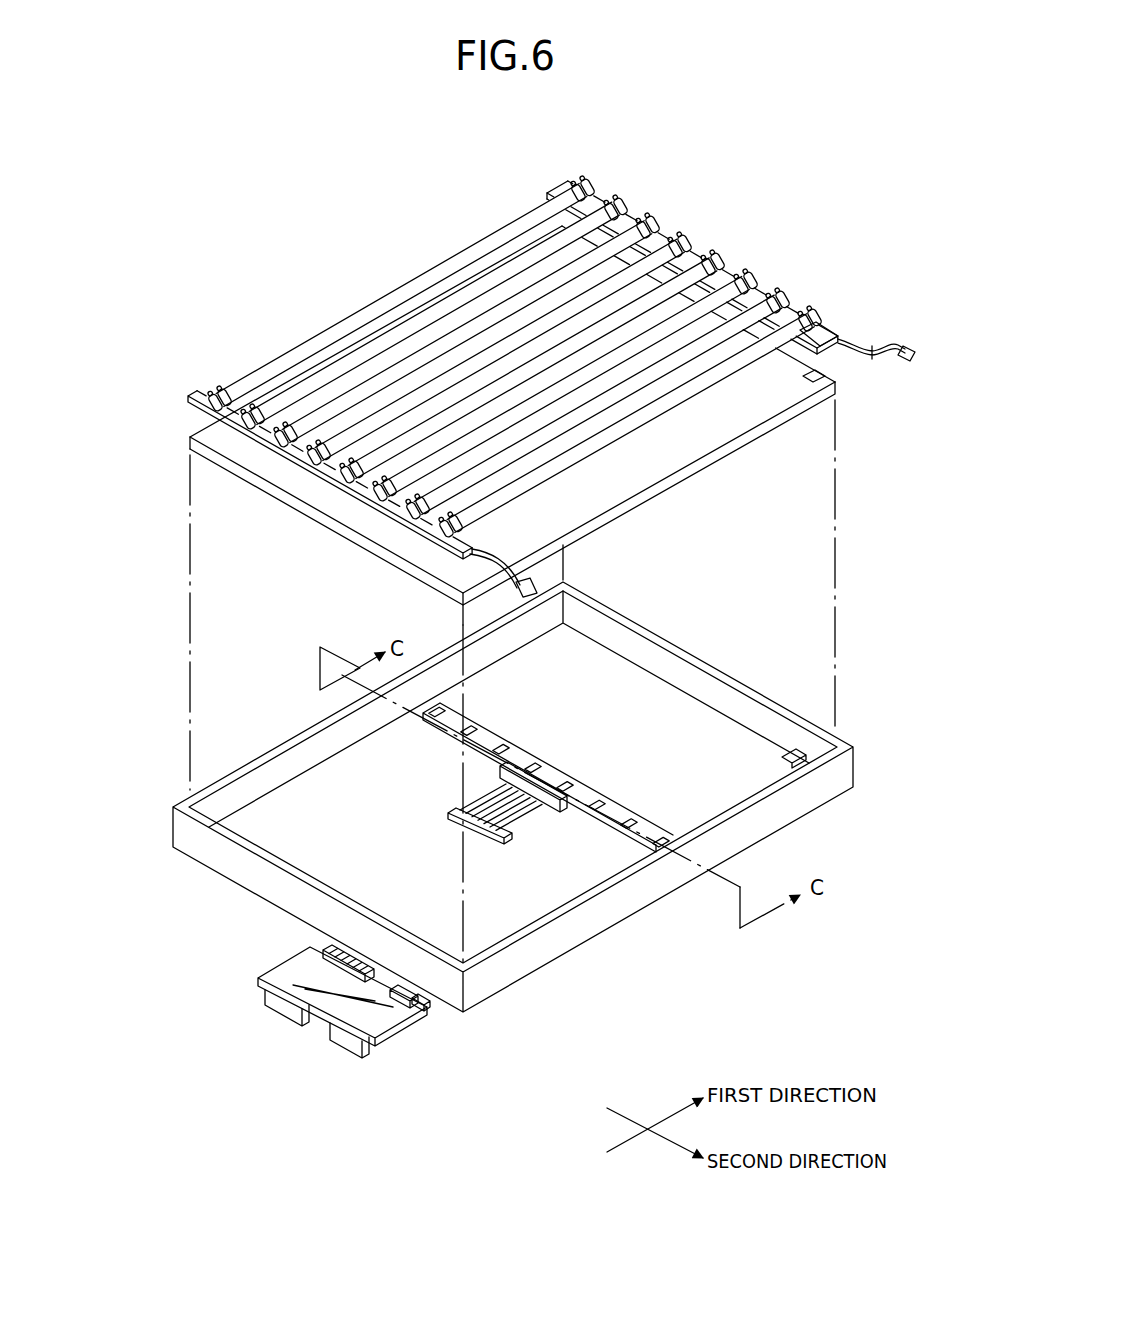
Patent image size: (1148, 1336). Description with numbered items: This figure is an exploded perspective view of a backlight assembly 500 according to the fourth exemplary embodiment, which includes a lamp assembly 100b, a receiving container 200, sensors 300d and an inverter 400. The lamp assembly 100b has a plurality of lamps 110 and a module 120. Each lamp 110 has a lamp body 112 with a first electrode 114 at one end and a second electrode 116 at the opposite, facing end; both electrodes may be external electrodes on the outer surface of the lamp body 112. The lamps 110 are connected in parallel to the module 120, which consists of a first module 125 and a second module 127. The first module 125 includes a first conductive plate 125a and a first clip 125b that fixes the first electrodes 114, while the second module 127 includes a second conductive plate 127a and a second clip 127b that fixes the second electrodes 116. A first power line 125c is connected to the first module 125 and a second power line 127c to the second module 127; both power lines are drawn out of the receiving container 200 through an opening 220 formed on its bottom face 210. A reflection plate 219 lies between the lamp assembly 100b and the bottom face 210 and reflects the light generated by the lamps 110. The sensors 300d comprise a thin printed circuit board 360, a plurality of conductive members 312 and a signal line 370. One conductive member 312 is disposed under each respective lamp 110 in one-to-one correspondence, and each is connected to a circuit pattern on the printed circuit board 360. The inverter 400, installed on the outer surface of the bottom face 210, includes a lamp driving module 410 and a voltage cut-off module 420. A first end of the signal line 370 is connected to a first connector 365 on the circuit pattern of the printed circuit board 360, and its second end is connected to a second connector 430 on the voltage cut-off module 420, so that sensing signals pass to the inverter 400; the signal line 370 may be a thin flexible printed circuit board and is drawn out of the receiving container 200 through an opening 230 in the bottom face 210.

The backlight assembly 500 is at (792, 198).
The lamp assembly 100b is at (768, 264).
The lamps 110 is at (703, 405).
The lamp body 112 is at (630, 422).
The first electrode 114 is at (436, 534).
The second electrode 116 is at (828, 320).
The module 120 is at (838, 340).
The first module 125 is at (176, 404).
The first conductive plate 125a is at (212, 396).
The first clip 125b is at (243, 386).
The first power line 125c is at (565, 570).
The second module 127 is at (557, 180).
The second conductive plate 127a is at (548, 192).
The second clip 127b is at (585, 178).
The second power line 127c is at (868, 358).
The reflection plate 219 is at (186, 437).
The receiving container 200 is at (826, 818).
The bottom face 210 is at (658, 692).
The opening 220 is at (789, 752).
The opening 230 is at (468, 833).
The sensors 300d is at (658, 784).
The conductive members 312 is at (590, 782).
The printed circuit board 360 is at (522, 755).
The first connector 365 is at (505, 775).
The signal line 370 is at (520, 818).
The inverter 400 is at (438, 1041).
The lamp driving module 410 is at (348, 1046).
The voltage cut-off module 420 is at (280, 1008).
The second connector 430 is at (328, 950).